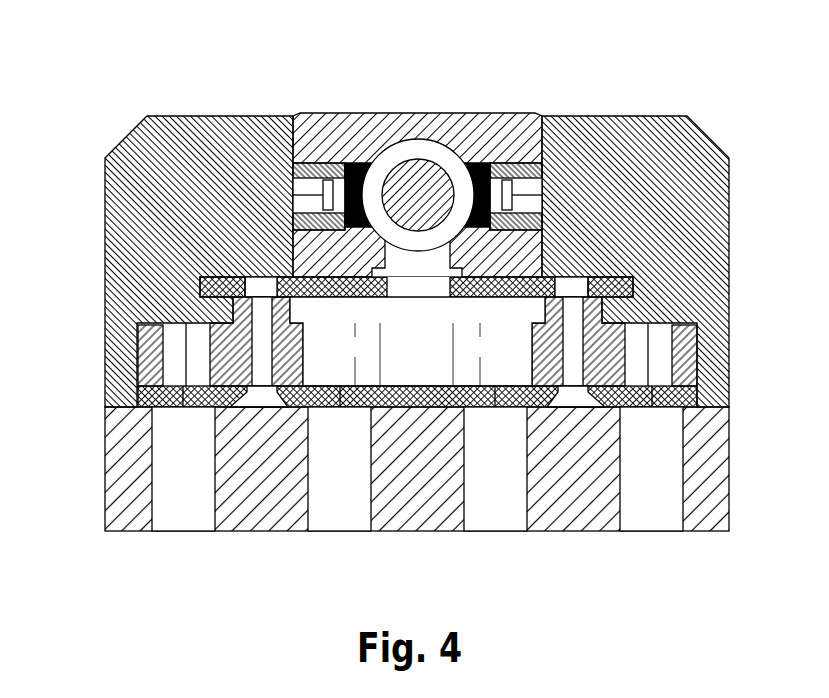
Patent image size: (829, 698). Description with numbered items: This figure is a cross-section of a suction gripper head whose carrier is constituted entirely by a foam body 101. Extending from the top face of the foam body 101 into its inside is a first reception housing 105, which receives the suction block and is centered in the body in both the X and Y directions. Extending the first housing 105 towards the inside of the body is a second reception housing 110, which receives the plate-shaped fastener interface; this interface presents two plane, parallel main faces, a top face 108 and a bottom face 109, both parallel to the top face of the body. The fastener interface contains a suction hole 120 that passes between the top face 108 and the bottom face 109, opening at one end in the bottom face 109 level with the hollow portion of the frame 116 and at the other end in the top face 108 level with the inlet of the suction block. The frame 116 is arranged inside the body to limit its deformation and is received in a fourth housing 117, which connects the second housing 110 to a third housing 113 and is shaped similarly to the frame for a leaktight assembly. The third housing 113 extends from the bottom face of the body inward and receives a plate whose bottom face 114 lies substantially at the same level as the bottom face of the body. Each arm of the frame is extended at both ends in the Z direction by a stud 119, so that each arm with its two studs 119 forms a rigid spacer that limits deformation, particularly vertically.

The foam body 101 is at (705, 205).
The first reception housing 105 is at (543, 143).
The top face 108 is at (608, 278).
The bottom face 109 is at (630, 315).
The second reception housing 110 is at (207, 287).
The third housing 113 is at (697, 394).
The bottom face 114 is at (403, 410).
The frame 116 is at (147, 357).
The fourth housing 117 is at (700, 360).
The stud 119 is at (292, 298).
The suction hole 120 is at (418, 290).